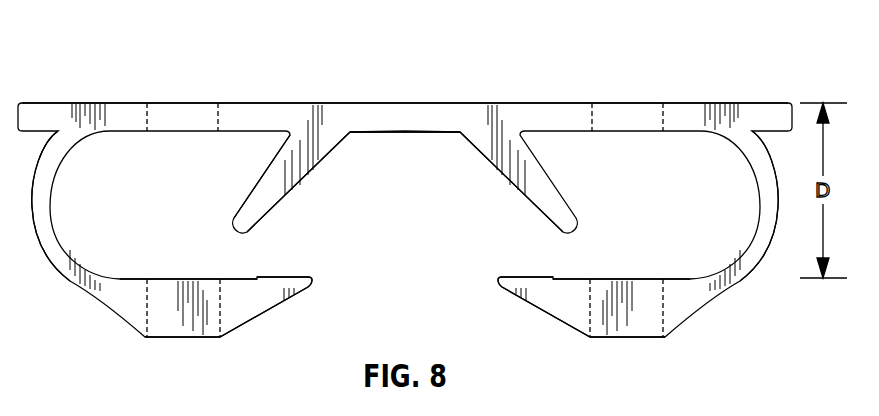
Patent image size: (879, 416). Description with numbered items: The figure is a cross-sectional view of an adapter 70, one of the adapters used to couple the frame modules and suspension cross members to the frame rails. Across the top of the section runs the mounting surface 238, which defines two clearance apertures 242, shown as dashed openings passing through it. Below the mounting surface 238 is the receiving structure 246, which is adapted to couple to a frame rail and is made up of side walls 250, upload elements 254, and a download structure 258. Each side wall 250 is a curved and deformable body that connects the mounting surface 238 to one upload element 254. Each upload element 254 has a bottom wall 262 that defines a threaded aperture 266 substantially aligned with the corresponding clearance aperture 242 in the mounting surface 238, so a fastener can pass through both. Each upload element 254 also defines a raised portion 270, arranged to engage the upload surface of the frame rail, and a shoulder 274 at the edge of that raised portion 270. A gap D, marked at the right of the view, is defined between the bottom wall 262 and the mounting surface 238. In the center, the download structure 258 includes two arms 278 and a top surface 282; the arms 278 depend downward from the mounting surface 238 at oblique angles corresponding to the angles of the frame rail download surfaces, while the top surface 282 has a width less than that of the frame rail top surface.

The adapter 70 is at (108, 70).
The mounting surface 238 is at (401, 103).
The clearance apertures 242 is at (152, 117).
The side walls 250 is at (44, 203).
The download structure 258 is at (256, 176).
The arms 278 is at (293, 184).
The top surface 282 is at (402, 133).
The bottom wall 262 is at (138, 278).
The shoulder 274 is at (257, 277).
The raised portion 270 is at (283, 276).
The threaded aperture 266 is at (156, 330).
The upload elements 254 is at (248, 305).
The receiving structure 246 is at (373, 282).